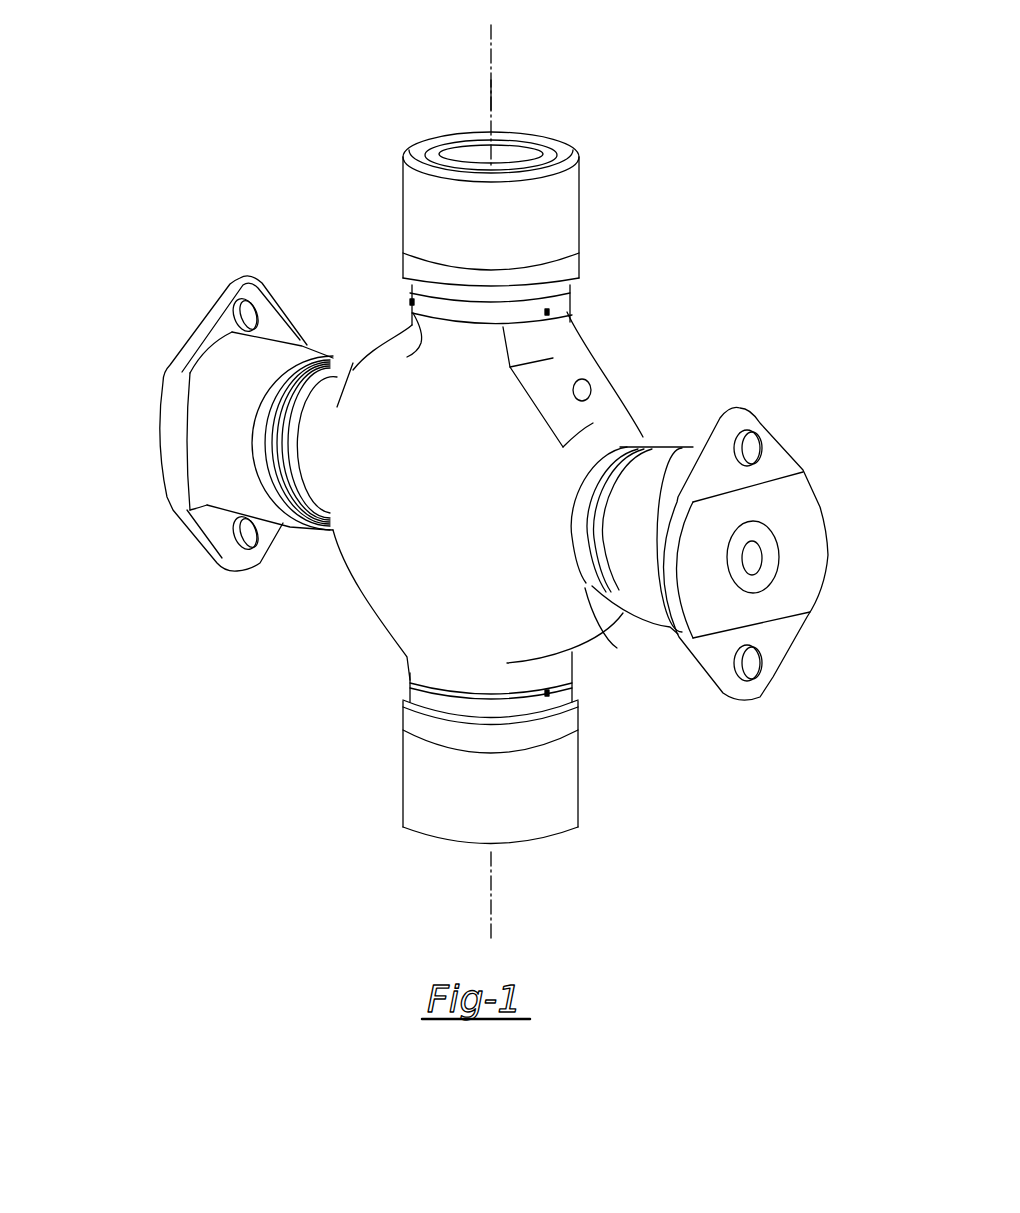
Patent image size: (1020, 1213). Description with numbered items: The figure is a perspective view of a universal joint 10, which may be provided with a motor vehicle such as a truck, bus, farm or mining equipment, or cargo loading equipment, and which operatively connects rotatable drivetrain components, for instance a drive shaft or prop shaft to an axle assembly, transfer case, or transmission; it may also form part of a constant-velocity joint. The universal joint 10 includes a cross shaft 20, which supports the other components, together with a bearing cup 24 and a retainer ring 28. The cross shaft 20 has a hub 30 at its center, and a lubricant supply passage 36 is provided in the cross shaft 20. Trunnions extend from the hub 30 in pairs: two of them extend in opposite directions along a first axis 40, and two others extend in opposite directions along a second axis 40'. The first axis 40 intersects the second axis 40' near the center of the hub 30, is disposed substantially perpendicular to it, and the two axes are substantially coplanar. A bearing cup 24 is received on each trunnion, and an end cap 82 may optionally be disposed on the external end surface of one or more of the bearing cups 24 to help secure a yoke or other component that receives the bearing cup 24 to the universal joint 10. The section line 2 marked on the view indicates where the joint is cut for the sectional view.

The section line 2- 2 is at (47, 415).
The universal joint 10 is at (655, 228).
The cross shaft 20 is at (605, 347).
The bearing cup 24 is at (501, 234).
The retainer ring 28 is at (332, 362).
The hub 30 is at (358, 597).
The lubricant supply passage 36 is at (588, 392).
The first axis 40 is at (799, 557).
The second axis 40' is at (459, 76).
The end cap 82 is at (790, 432).